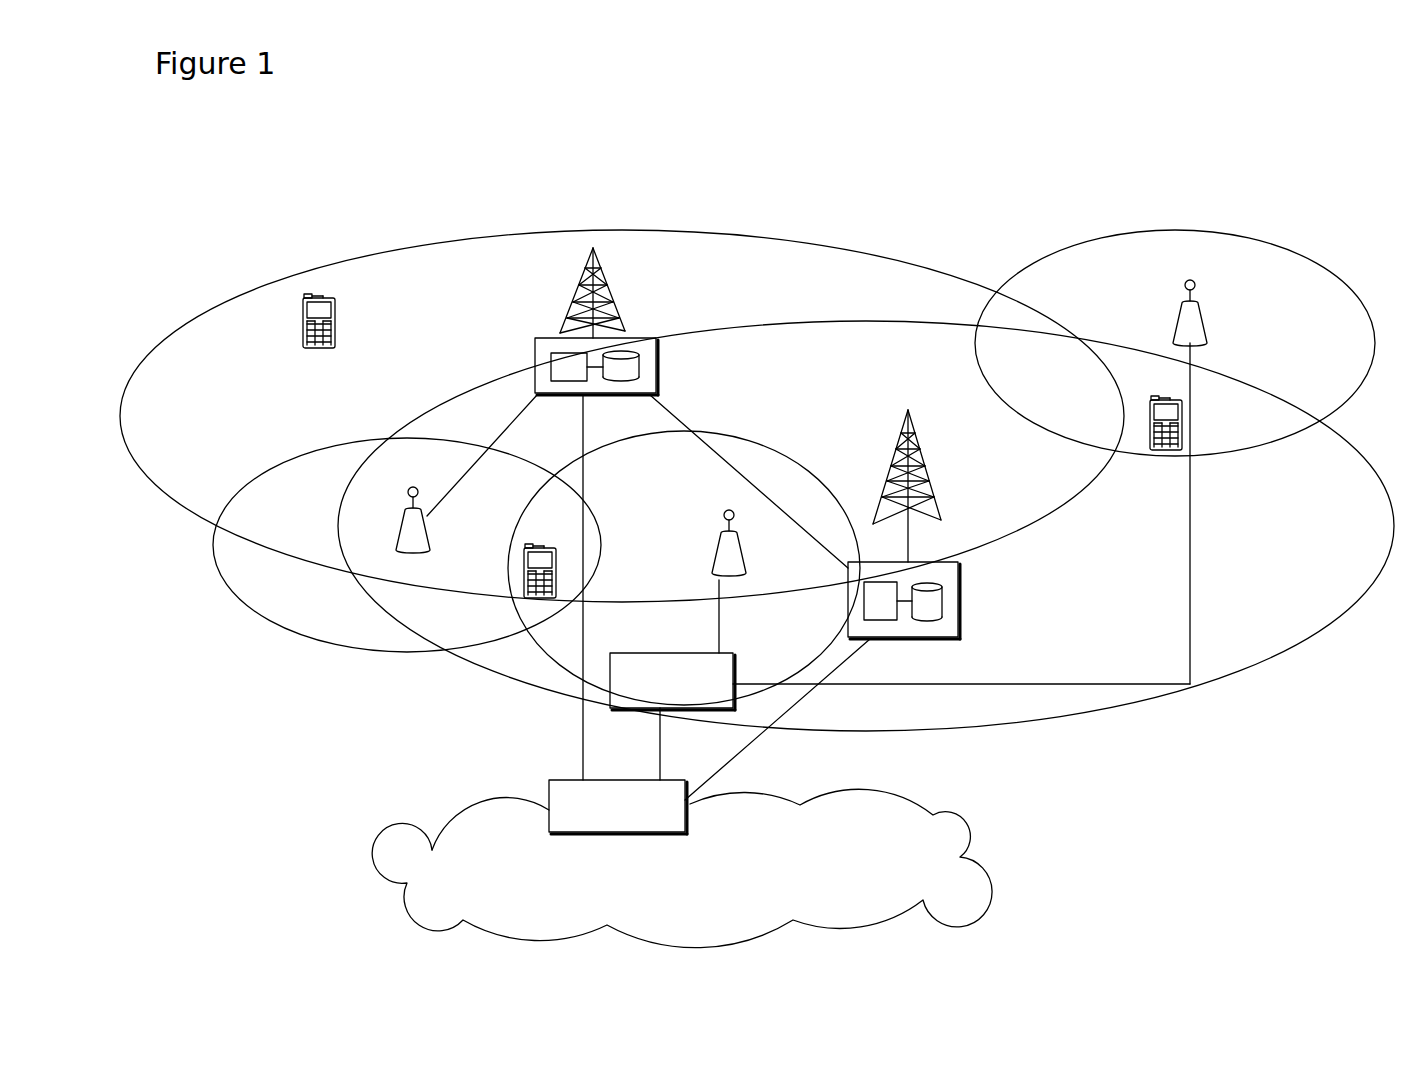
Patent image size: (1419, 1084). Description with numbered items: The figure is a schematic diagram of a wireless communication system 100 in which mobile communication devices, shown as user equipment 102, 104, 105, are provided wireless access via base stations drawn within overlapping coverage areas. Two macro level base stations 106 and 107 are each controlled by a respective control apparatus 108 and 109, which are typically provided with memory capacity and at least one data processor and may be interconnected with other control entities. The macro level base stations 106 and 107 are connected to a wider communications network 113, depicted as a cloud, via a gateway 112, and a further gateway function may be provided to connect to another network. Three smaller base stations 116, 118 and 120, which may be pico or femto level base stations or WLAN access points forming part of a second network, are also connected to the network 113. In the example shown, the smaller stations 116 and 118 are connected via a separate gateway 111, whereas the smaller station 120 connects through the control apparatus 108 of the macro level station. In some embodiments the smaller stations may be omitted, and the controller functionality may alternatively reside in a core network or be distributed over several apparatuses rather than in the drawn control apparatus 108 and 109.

The wireless communication system 100 is at (222, 280).
The user equipment 102 is at (300, 340).
The user equipment 104 is at (527, 573).
The user equipment 105 is at (1165, 452).
The macro level base station 106 is at (573, 300).
The macro level base station 107 is at (935, 483).
The control apparatus 108 is at (535, 353).
The control apparatus 109 is at (947, 628).
The gateway 111 is at (618, 686).
The gateway 112 is at (553, 782).
The wider communications network 113 is at (467, 842).
The smaller base station 116 is at (1173, 317).
The smaller base station 118 is at (728, 563).
The smaller base station 120 is at (397, 523).